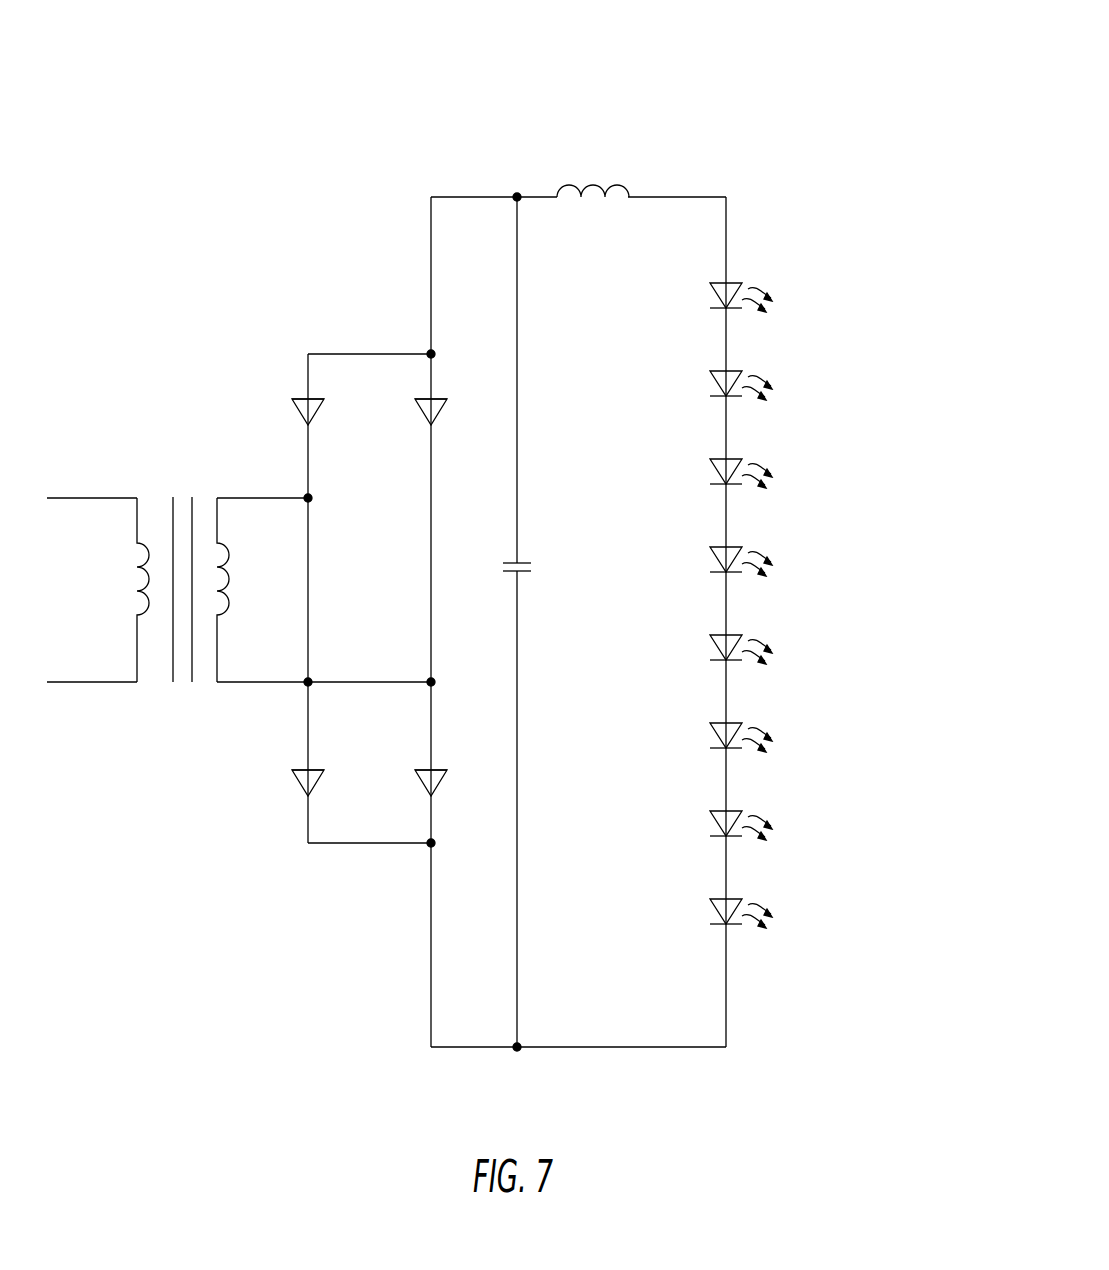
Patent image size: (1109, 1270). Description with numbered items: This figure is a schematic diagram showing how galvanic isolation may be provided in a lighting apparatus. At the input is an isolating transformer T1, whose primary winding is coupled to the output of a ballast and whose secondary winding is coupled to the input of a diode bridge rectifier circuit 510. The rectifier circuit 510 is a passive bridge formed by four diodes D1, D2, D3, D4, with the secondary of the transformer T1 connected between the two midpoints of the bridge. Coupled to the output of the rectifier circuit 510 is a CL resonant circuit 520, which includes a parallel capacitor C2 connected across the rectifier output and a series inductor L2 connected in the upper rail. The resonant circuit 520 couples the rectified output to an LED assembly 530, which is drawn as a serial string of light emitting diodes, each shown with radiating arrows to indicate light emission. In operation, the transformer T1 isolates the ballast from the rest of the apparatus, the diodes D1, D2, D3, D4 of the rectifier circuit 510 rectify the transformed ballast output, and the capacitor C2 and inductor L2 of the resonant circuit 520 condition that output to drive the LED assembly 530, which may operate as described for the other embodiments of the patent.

The resonant circuit 520 is at (660, 527).
The LED assembly 530 is at (842, 270).
The diode bridge rectifier circuit 510 is at (354, 622).
The isolating transformer T1 is at (183, 472).
The diode D1 is at (322, 414).
The diode D2 is at (449, 414).
The diode D3 is at (323, 787).
The diode D4 is at (449, 787).
The parallel capacitor C2 is at (531, 622).
The series inductor L2 is at (593, 173).